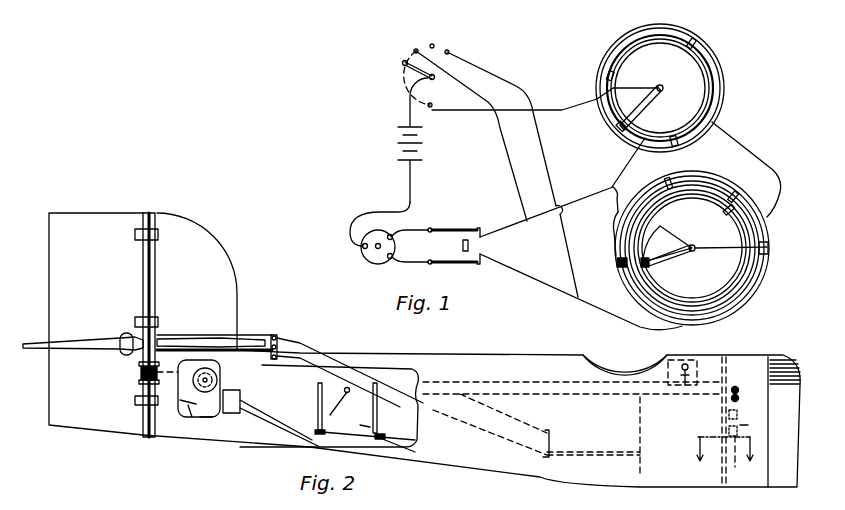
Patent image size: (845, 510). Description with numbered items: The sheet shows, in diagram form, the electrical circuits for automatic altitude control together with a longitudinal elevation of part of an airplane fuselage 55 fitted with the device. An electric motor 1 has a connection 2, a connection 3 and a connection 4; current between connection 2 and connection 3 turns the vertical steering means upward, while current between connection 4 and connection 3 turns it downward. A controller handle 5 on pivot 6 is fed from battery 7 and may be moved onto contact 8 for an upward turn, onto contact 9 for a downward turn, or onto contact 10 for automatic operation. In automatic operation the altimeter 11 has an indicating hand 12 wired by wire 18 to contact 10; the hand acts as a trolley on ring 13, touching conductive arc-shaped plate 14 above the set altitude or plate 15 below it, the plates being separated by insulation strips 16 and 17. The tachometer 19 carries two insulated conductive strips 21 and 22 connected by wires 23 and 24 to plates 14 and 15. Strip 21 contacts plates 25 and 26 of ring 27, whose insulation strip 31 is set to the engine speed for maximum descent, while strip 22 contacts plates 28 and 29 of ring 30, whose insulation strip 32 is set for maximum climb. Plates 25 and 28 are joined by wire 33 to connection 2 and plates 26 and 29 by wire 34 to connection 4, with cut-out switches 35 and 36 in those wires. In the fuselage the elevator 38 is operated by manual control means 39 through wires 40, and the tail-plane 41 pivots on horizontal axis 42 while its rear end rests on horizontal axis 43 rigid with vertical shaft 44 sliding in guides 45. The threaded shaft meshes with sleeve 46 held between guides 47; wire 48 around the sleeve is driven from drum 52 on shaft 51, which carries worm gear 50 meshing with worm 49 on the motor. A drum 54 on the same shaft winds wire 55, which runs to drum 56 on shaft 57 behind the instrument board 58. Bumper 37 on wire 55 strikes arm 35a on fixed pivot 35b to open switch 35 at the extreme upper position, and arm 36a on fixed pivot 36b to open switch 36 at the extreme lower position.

In FIG. 1, the electric motor 1 is at (372, 259).
In FIG. 2, the electric motor 1 is at (241, 401).
In FIG. 1, the connection 2 is at (393, 236).
In FIG. 1, the connection 3 is at (362, 247).
In FIG. 2, the connection 3 is at (724, 461).
In FIG. 1, the connection 4 is at (391, 259).
In FIG. 1, the controller handle 5 is at (404, 66).
In FIG. 2, the controller handle 5 is at (689, 372).
In FIG. 1, the pivot 6 is at (433, 79).
In FIG. 1, the battery 7 is at (397, 141).
In FIG. 1, the contact 8 is at (413, 51).
In FIG. 1, the contact 9 is at (450, 52).
In FIG. 1, the contact 10 is at (433, 104).
In FIG. 1, the altimeter 11 is at (613, 41).
In FIG. 2, the altimeter 11 is at (727, 414).
In FIG. 1, the indicating hand 12 is at (647, 100).
In FIG. 1, the ring 13 is at (715, 72).
In FIG. 1, the conductive arc-shaped plate 14 is at (713, 93).
In FIG. 1, the conductive arc-shaped plate 15 is at (606, 75).
In FIG. 1, the insulation strip 16 is at (682, 142).
In FIG. 1, the insulation strip 17 is at (699, 45).
In FIG. 1, the wire 18 is at (567, 110).
In FIG. 1, the tachometer 19 is at (752, 293).
In FIG. 2, the tachometer 19 is at (727, 434).
In FIG. 1, the insulated conductive strip 21 is at (694, 254).
In FIG. 1, the insulated conductive strip 22 is at (678, 250).
In FIG. 1, the wire 23 is at (758, 157).
In FIG. 1, the wire 24 is at (626, 166).
In FIG. 1, the plate 25 is at (672, 180).
In FIG. 1, the plate 26 is at (732, 311).
In FIG. 1, the ring 27 is at (769, 248).
In FIG. 1, the plate 28 is at (731, 205).
In FIG. 1, the plate 29 is at (735, 270).
In FIG. 1, the ring 30 is at (726, 190).
In FIG. 1, the insulation strip 31 is at (615, 238).
In FIG. 1, the insulation strip 32 is at (652, 266).
In FIG. 1, the wire 33 is at (543, 214).
In FIG. 2, the wire 33 is at (285, 432).
In FIG. 1, the wire 34 is at (549, 286).
In FIG. 2, the wire 34 is at (255, 430).
In FIG. 1, the cut-out switch 35 is at (447, 230).
In FIG. 2, the cut-out switch 35 is at (370, 430).
In FIG. 2, the arm 35a is at (373, 407).
In FIG. 2, the fixed pivot 35b is at (380, 418).
In FIG. 1, the cut-out switch 36 is at (447, 264).
In FIG. 2, the cut-out switch 36 is at (322, 426).
In FIG. 2, the arm 36a is at (262, 406).
In FIG. 2, the fixed pivot 36b is at (266, 418).
In FIG. 1, the bumper 37 is at (462, 245).
In FIG. 2, the bumper 37 is at (347, 393).
In FIG. 2, the horizontal rudder or elevator 38 is at (71, 344).
In FIG. 2, the manual control means 39 is at (638, 425).
In FIG. 2, the wires 40 is at (538, 410).
In FIG. 2, the tail-plane 41 is at (192, 348).
In FIG. 2, the horizontal axis 42 is at (272, 336).
In FIG. 2, the horizontal axis 43 is at (165, 340).
In FIG. 2, the vertical shaft 44 is at (150, 212).
In FIG. 2, the guides 45 is at (158, 234).
In FIG. 2, the sleeve 46 is at (139, 381).
In FIG. 2, the guides 47 is at (139, 366).
In FIG. 2, the wire 48 is at (157, 381).
In FIG. 2, the worm 49 is at (200, 398).
In FIG. 2, the worm gear 50 is at (218, 381).
In FIG. 2, the shaft 51 is at (182, 402).
In FIG. 2, the drum 52 is at (206, 418).
In FIG. 2, the drum 54 is at (188, 412).
In FIG. 2, the wire 55 is at (565, 382).
In FIG. 2, the drum 56 is at (740, 393).
In FIG. 2, the shaft 57 is at (742, 426).
In FIG. 2, the instrument board 58 is at (728, 361).